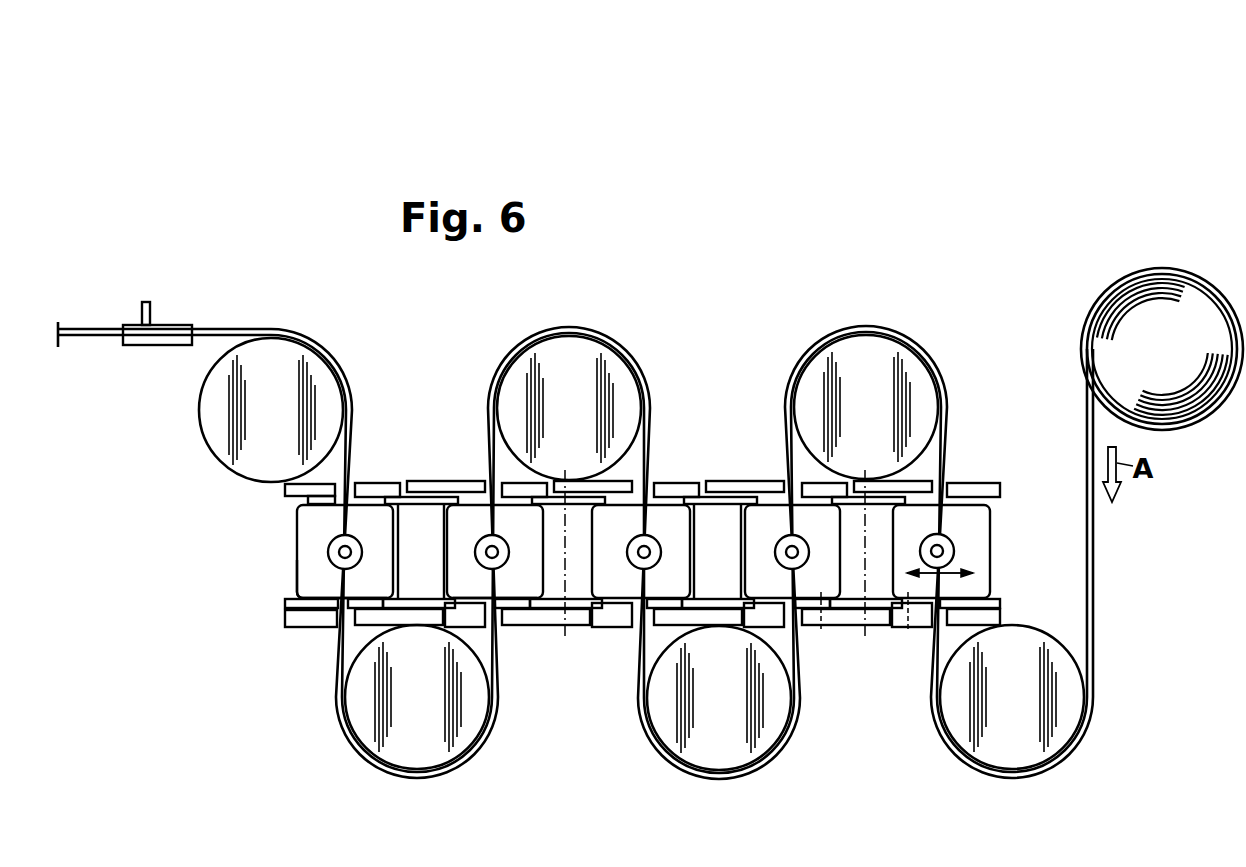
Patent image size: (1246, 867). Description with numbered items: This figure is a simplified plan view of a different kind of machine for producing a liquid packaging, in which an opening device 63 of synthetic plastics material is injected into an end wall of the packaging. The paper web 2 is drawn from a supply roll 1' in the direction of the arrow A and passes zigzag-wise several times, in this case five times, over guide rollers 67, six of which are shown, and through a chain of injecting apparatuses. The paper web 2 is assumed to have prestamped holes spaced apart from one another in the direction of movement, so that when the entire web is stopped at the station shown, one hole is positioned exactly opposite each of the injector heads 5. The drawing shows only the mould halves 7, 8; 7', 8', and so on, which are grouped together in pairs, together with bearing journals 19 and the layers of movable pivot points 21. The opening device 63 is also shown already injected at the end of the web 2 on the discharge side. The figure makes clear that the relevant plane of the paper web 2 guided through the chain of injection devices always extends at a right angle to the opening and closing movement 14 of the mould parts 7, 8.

The supply roll 1' is at (1162, 308).
The paper web 2 is at (224, 330).
The opening device 63 is at (141, 347).
The guide rollers 67 is at (274, 357).
The mould half 7 is at (594, 539).
The mould half 8 is at (594, 593).
The mould half 7' is at (718, 624).
The mould half 8' is at (569, 624).
The injector heads 5 is at (328, 552).
The movable pivot points 21 is at (863, 470).
The bearing journals 19 is at (822, 617).
The opening and closing movement 14 is at (973, 573).